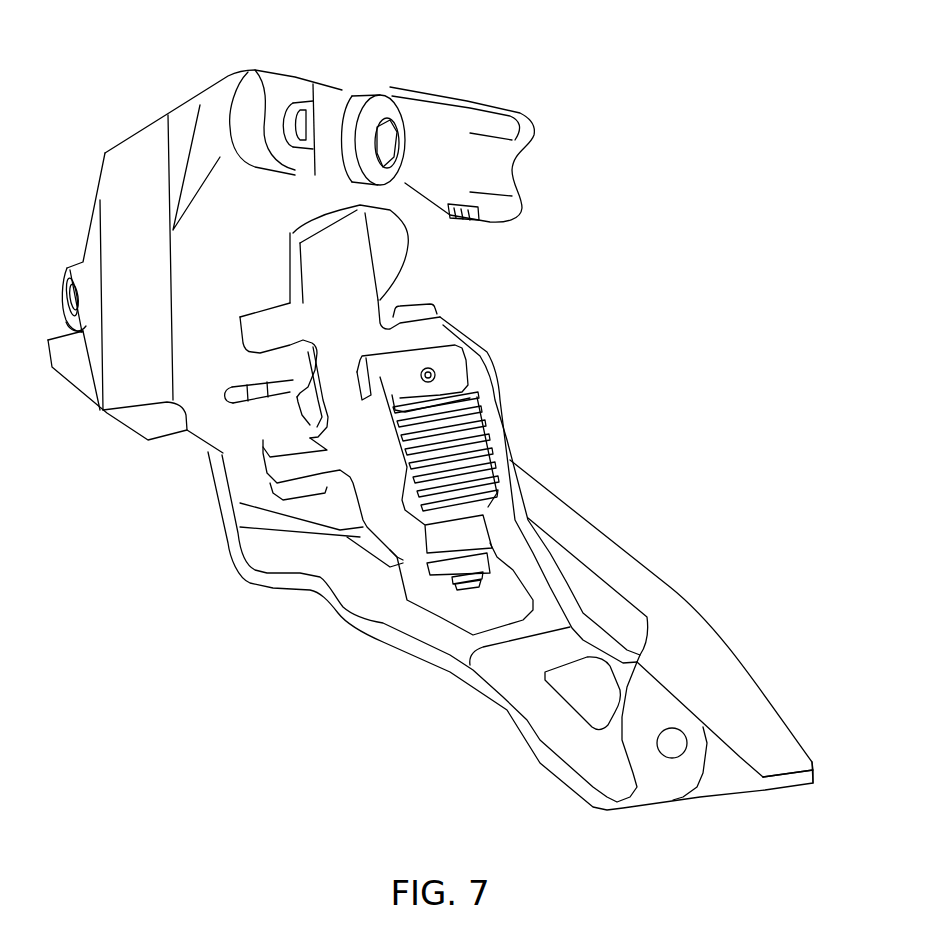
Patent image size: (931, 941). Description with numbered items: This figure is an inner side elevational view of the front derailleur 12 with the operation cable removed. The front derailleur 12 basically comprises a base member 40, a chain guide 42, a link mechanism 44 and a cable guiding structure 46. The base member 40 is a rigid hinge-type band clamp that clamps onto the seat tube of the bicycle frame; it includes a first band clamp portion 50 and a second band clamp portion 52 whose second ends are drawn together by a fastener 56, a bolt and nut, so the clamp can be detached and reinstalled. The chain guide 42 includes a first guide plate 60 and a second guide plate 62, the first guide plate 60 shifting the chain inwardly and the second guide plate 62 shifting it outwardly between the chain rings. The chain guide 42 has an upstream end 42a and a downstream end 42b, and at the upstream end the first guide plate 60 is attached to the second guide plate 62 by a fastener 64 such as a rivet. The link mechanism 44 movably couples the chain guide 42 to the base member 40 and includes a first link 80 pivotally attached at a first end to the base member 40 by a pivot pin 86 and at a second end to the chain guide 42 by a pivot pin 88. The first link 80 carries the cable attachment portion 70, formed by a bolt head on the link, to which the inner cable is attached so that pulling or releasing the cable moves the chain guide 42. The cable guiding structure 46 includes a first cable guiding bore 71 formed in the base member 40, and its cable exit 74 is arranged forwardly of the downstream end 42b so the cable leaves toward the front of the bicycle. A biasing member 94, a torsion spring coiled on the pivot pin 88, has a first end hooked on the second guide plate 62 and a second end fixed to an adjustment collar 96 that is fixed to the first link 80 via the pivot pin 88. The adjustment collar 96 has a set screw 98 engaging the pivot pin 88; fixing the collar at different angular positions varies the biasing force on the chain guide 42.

The front derailleur 12 is at (612, 96).
The base member 40 is at (130, 131).
The chain guide 42 is at (596, 516).
The upstream end 42a is at (817, 759).
The downstream end 42b is at (204, 533).
The link mechanism 44 is at (347, 487).
The cable guiding structure 46 is at (64, 261).
The first band clamp portion 50 is at (204, 88).
The second band clamp portion 52 is at (478, 125).
The fastener 56 is at (364, 118).
The first guide plate 60 is at (662, 578).
The second guide plate 62 is at (433, 657).
The fastener 64 is at (670, 747).
The cable attachment portion 70 is at (410, 250).
The first cable guiding bore 71 is at (76, 328).
The cable exit 74 is at (63, 288).
The first link 80 is at (335, 307).
The pivot pin 86 is at (280, 385).
The pivot pin 88 is at (437, 313).
The biasing member 94 is at (473, 424).
The adjustment collar 96 is at (470, 364).
The set screw 98 is at (423, 372).